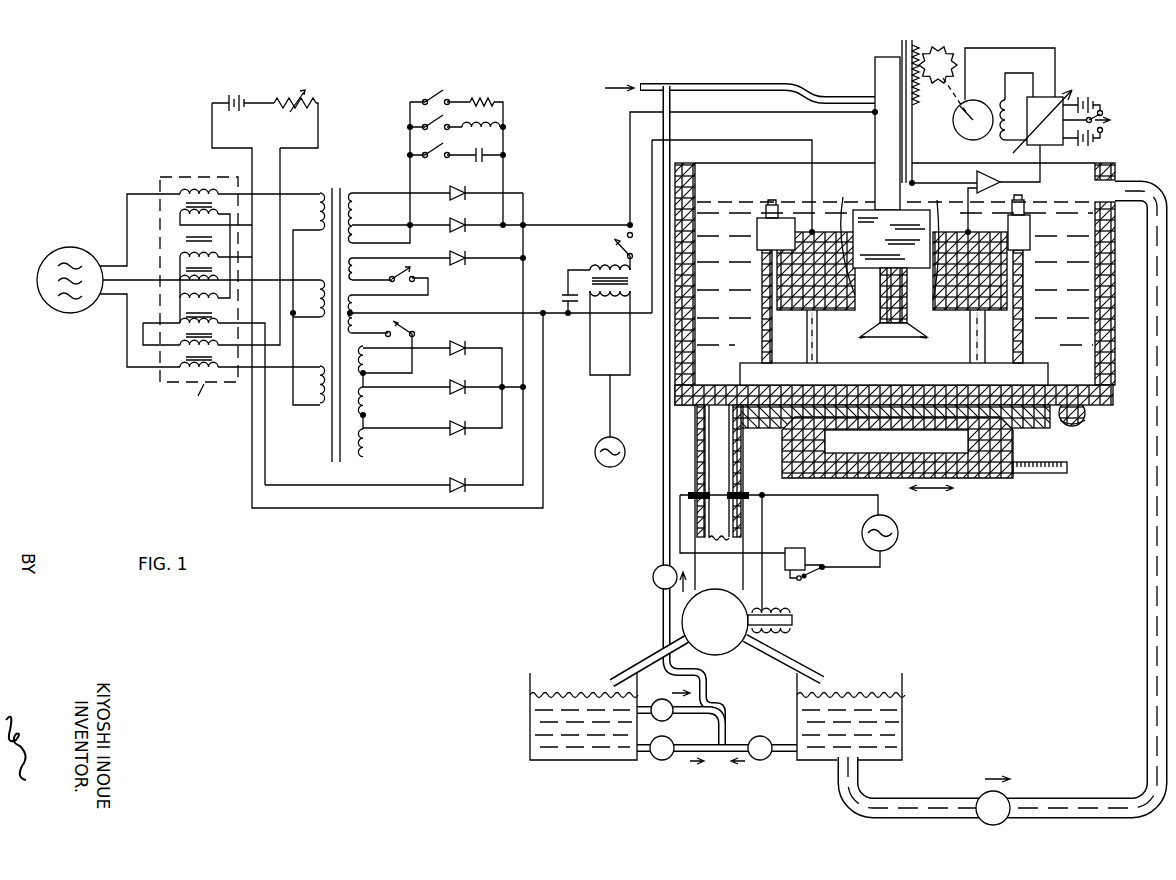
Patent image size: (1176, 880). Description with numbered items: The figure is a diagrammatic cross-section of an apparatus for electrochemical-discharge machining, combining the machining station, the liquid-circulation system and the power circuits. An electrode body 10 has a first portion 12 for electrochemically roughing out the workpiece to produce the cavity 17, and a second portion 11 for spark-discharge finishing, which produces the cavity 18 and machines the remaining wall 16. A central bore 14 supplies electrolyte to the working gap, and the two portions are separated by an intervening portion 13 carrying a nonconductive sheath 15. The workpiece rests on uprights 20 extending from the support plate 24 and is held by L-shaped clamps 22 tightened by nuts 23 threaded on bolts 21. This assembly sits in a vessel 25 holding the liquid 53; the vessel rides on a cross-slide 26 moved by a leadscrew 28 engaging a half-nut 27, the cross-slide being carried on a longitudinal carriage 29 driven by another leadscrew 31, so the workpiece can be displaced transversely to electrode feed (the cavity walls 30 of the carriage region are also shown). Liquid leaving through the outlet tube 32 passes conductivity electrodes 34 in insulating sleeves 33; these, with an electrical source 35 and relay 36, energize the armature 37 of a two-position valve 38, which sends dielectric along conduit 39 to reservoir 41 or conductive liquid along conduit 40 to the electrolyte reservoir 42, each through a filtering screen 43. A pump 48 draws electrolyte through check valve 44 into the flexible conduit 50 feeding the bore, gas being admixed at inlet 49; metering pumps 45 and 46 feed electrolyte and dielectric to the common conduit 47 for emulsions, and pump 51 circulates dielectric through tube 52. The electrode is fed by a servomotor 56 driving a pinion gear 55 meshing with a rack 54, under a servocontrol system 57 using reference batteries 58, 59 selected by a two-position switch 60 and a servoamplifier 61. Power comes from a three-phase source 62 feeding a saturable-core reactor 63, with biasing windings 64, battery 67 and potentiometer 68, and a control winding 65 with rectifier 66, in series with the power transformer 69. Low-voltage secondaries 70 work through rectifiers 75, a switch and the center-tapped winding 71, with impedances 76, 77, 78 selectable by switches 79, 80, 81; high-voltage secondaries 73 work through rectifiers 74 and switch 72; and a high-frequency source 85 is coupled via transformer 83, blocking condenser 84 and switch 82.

The electrode body 10 is at (873, 63).
The second portion 11 is at (868, 208).
The first portion 12 is at (917, 327).
The intervening portion 13 is at (873, 325).
The central bore 14 is at (901, 284).
The sheath 15 is at (882, 283).
The remaining wall 16 is at (937, 218).
The cavity 17 is at (843, 200).
The cavity 18 is at (845, 259).
The uprights 20 is at (817, 352).
The bolts 21 is at (762, 345).
The L-shaped clamps 22 is at (1030, 223).
The nuts 23 is at (1025, 210).
The support plate 24 is at (1050, 367).
The vessel 25 is at (1103, 407).
The cross-slide 26 is at (1028, 432).
The half-nut 27 is at (1072, 428).
The leadscrew 28 is at (1087, 422).
The longitudinal carriage 29 is at (975, 478).
The carriage cavity walls 30 is at (812, 423).
The leadscrew 31 is at (1047, 473).
The outlet tube 32 is at (729, 400).
The insulating sleeves 33 is at (737, 488).
The electrodes 34 is at (693, 493).
The electrical source 35 is at (895, 526).
The relay 36 is at (795, 548).
The armature 37 is at (788, 632).
The two-position valve 38 is at (740, 647).
The conduit 39 is at (800, 660).
The conduit 40 is at (645, 661).
The reservoir 41 is at (902, 673).
The electrolyte reservoir 42 is at (530, 675).
The filtering screen 43 is at (600, 692).
The check valve 44 is at (673, 718).
The metering pump 45 is at (657, 762).
The metering pump 46 is at (763, 760).
The common conduit 47 is at (657, 623).
The pump 48 is at (652, 573).
The inlet 49 is at (653, 84).
The flexible conduit 50 is at (711, 88).
The pump 51 is at (1010, 792).
The tube 52 is at (898, 798).
The liquid 53 is at (1103, 276).
The rack 54 is at (908, 43).
The pinion gear 55 is at (945, 48).
The servomotor 56 is at (966, 131).
The servocontrol system 57 is at (1051, 94).
The battery 58 is at (1090, 93).
The battery 59 is at (1100, 145).
The two-position switch 60 is at (1112, 120).
The servoamplifier 61 is at (992, 180).
The three-phase-current source 62 is at (45, 305).
The saturable-core reactor 63 is at (182, 176).
The biasing windings 64 is at (180, 215).
The control winding 65 is at (180, 322).
The rectifier 66 is at (458, 482).
The battery 67 is at (233, 95).
The potentiometer 68 is at (300, 95).
The power transformer 69 is at (332, 462).
The low-voltage secondary windings 70 is at (350, 233).
The center-tapped secondary winding 71 is at (405, 283).
The switch 72 is at (402, 322).
The high-voltage secondary windings 73 is at (356, 352).
The rectifiers 74 is at (459, 349).
The rectifiers 75 is at (463, 195).
The impedance 76 is at (480, 98).
The impedance 77 is at (492, 122).
The impedance 78 is at (490, 150).
The switch 79 is at (432, 95).
The switch 80 is at (433, 122).
The switch 81 is at (432, 150).
The switch 82 is at (617, 242).
The transformer 83 is at (622, 262).
The D-C blocking condenser 84 is at (570, 297).
The high-frequency alternating-current source 85 is at (595, 440).